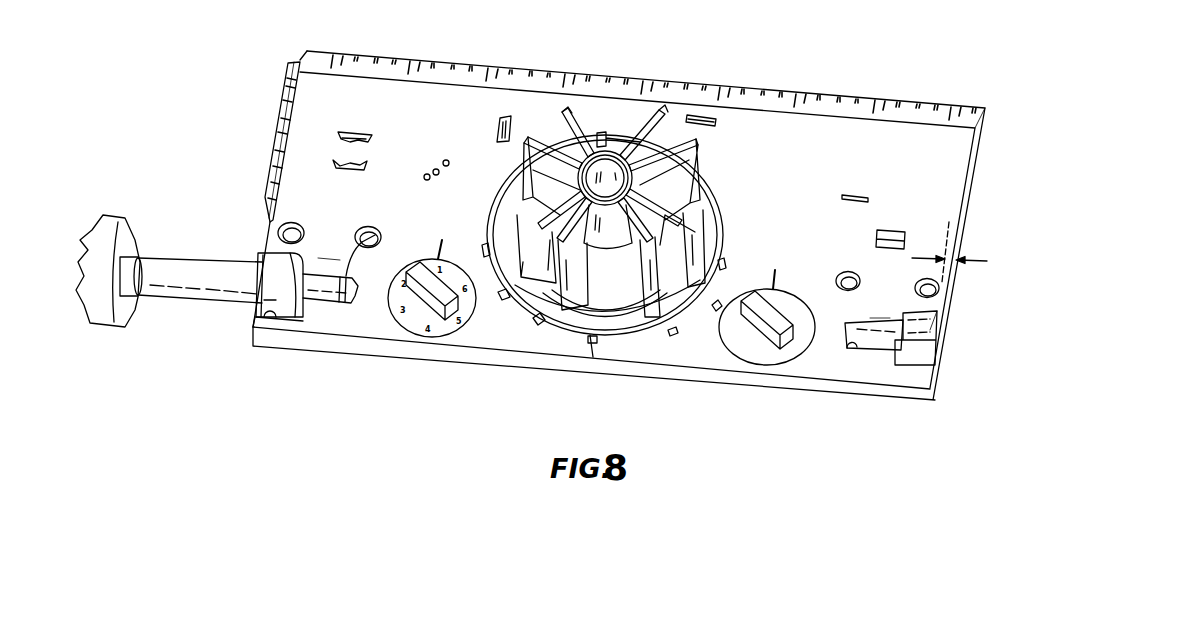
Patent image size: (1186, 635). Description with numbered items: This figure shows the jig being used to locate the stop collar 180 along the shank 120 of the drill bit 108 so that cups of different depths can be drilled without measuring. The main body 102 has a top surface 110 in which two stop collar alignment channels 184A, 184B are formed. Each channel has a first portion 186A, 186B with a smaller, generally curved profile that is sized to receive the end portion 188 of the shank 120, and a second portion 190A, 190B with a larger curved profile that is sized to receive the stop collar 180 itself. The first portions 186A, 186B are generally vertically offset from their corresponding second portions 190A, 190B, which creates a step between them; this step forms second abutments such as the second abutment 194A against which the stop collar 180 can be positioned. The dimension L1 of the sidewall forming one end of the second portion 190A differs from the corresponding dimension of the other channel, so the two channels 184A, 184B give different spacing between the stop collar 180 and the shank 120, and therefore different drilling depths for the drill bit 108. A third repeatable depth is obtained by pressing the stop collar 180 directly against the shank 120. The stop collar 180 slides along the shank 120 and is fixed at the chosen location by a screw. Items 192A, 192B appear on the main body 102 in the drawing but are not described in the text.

The main body 102 is at (619, 225).
The top surface 110 is at (727, 140).
The drill bit 108 is at (176, 262).
The shank 120 is at (203, 296).
The stop collar 180 is at (275, 263).
The stop collar alignment channel 184A is at (871, 350).
The stop collar alignment channel 184B is at (320, 307).
The first portion 186A is at (880, 313).
The first portion 186B is at (328, 263).
The end portion 188 is at (342, 308).
The second portion 190A is at (938, 300).
The second portion 190B is at (273, 320).
The adjustment dial 192A is at (822, 354).
The fastener 192B is at (371, 228).
The second abutment 194A is at (907, 366).
The dimension L1 is at (917, 256).